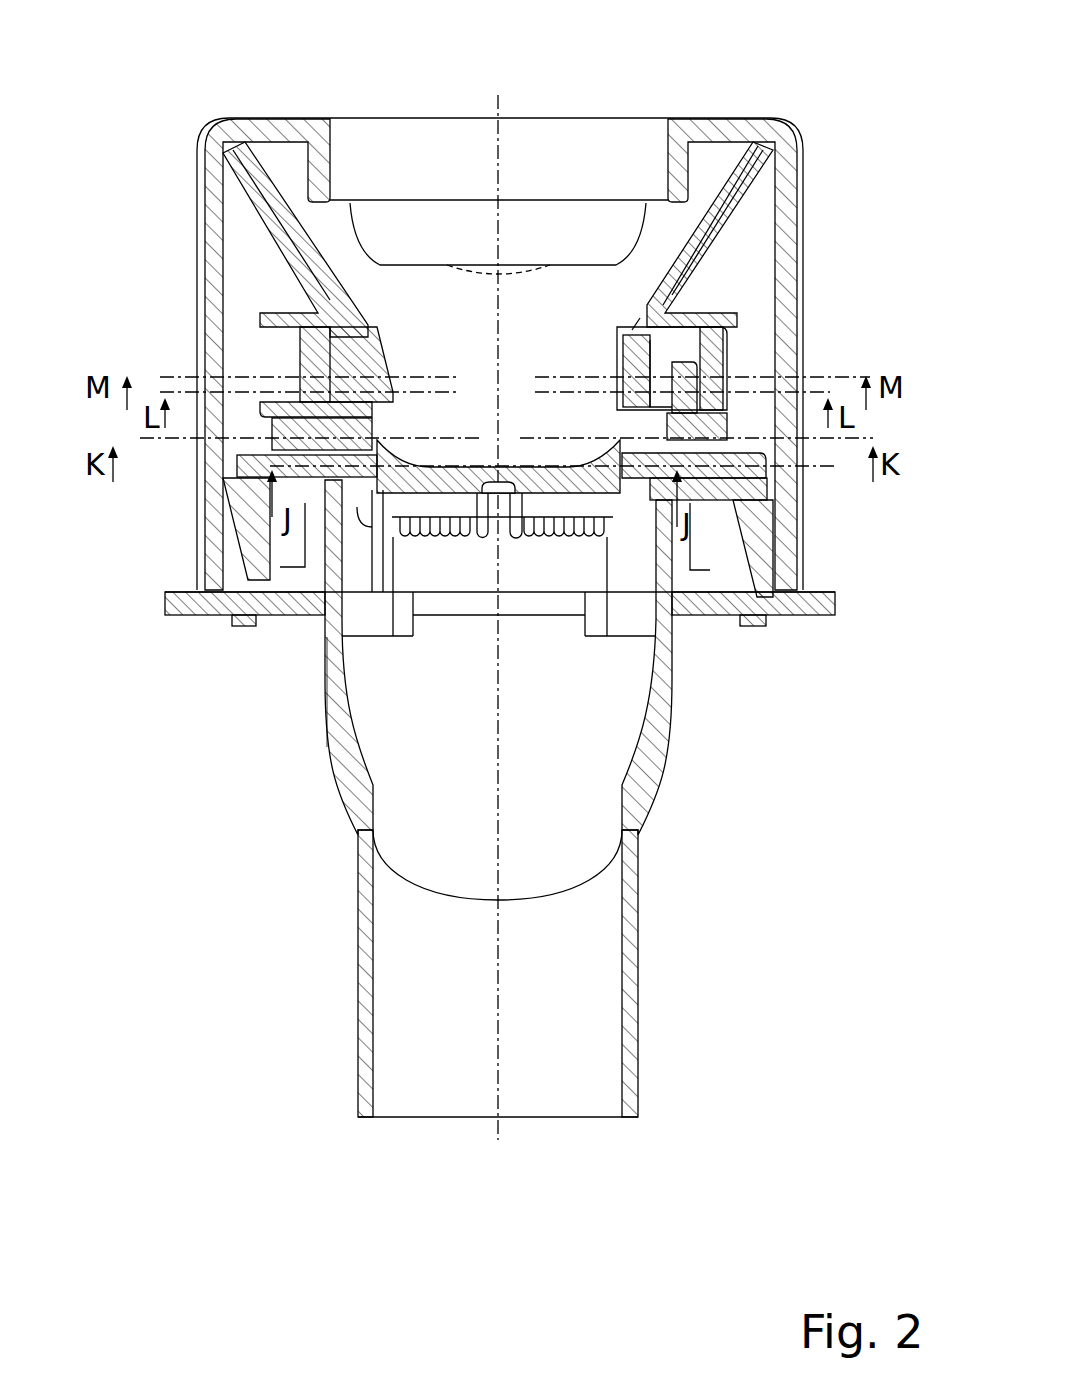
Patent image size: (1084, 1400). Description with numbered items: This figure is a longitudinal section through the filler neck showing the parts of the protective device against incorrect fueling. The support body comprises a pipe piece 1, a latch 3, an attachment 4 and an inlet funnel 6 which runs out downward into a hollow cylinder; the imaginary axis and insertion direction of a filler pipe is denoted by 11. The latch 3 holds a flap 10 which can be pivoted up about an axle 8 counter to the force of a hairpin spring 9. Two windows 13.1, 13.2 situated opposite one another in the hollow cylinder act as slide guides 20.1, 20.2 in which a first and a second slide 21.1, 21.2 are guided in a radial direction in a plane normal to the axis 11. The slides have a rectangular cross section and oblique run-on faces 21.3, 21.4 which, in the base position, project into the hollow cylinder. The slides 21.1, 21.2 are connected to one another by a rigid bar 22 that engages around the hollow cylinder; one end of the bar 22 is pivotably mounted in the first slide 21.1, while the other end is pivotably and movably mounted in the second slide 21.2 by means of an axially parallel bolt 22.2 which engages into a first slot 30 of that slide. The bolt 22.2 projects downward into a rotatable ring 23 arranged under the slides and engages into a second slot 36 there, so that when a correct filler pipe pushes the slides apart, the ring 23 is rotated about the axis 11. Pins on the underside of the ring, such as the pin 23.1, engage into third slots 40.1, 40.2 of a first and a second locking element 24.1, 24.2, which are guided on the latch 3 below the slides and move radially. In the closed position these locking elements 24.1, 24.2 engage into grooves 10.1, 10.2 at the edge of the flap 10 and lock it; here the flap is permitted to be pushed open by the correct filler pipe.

The pipe piece 1 is at (632, 947).
The latch 3 is at (740, 498).
The attachment 4 is at (785, 173).
The inlet funnel 6 is at (740, 189).
The axle 8 is at (412, 503).
The hairpin spring 9 is at (385, 615).
The flap 10 is at (412, 476).
The groove 10.1 is at (380, 363).
The groove 10.2 is at (622, 460).
The axis 11 is at (498, 946).
The window 13.1 is at (370, 333).
The window 13.2 is at (627, 380).
The slide guide 20.1 is at (343, 335).
The slide guide 20.2 is at (710, 318).
The first slide 21.1 is at (285, 318).
The second slide 21.2 is at (693, 338).
The oblique run-on face 21.3 is at (380, 363).
The oblique run-on face 21.4 is at (634, 337).
The bar 22 is at (683, 365).
The bolt 22.2 is at (710, 462).
The rotatable ring 23 is at (290, 428).
The pin 23.1 is at (283, 455).
The first locking element 24.1 is at (312, 467).
The second locking element 24.2 is at (750, 466).
The first slot 30 is at (700, 392).
The second slot 36 is at (687, 425).
The third slot 40.1 is at (260, 458).
The third slot 40.2 is at (773, 485).